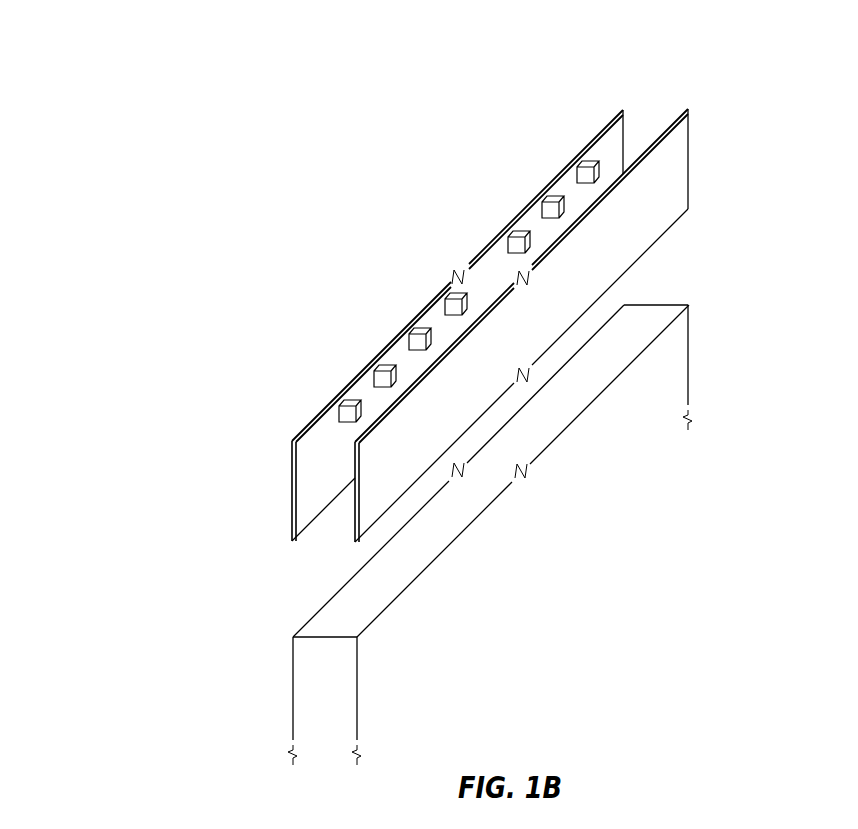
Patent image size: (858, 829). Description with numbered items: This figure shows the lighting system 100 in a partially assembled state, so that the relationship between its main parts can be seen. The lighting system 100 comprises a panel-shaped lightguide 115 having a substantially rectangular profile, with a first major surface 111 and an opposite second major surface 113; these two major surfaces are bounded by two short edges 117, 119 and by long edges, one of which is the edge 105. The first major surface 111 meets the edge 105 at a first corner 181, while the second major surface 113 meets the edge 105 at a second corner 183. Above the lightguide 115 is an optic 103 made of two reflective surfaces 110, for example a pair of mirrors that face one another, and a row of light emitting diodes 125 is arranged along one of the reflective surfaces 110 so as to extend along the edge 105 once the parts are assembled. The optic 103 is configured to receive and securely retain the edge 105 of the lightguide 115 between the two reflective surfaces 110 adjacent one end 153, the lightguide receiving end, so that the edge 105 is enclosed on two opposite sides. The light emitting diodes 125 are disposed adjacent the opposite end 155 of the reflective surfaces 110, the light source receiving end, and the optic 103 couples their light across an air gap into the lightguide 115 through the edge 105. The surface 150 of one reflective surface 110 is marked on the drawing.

The lighting system 100 is at (535, 95).
The reflective surfaces 110 is at (427, 320).
The second substrate surface 150 is at (659, 224).
The light emitting diodes 125 is at (472, 245).
The opposite end of the reflective surfaces 155 is at (258, 436).
The optic 103 is at (268, 499).
The end of the reflective surfaces 153 is at (278, 571).
The edge 105 is at (450, 535).
The lightguide 115 is at (395, 476).
The second corner 183 is at (323, 605).
The first corner 181 is at (467, 527).
The first major surface 111 is at (605, 497).
The second major surface 113 is at (260, 706).
The short edge 117 is at (312, 701).
The short edge 119 is at (713, 350).